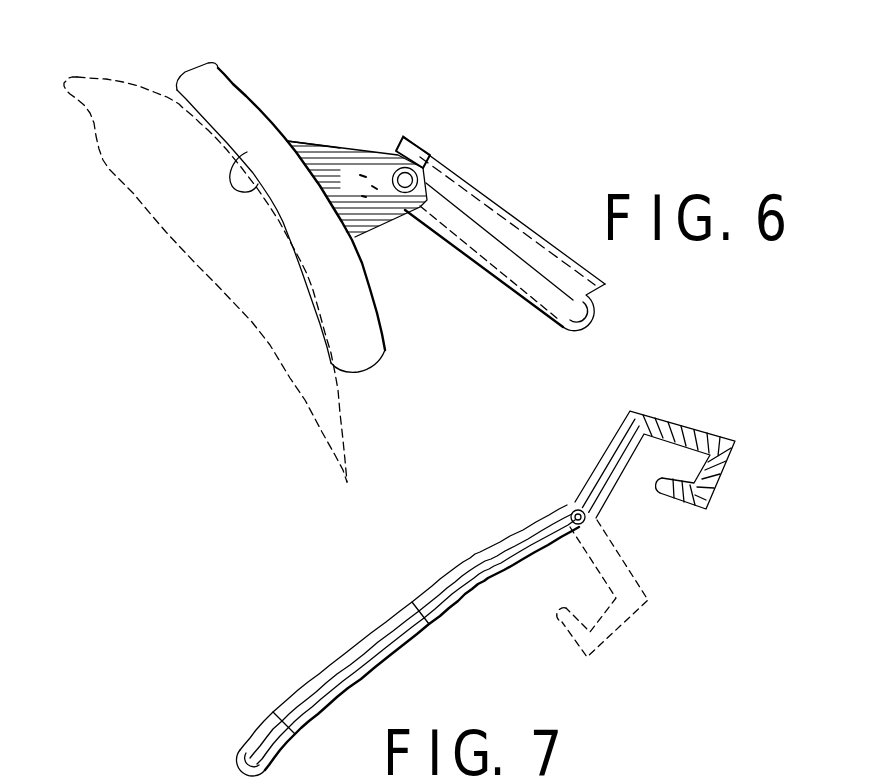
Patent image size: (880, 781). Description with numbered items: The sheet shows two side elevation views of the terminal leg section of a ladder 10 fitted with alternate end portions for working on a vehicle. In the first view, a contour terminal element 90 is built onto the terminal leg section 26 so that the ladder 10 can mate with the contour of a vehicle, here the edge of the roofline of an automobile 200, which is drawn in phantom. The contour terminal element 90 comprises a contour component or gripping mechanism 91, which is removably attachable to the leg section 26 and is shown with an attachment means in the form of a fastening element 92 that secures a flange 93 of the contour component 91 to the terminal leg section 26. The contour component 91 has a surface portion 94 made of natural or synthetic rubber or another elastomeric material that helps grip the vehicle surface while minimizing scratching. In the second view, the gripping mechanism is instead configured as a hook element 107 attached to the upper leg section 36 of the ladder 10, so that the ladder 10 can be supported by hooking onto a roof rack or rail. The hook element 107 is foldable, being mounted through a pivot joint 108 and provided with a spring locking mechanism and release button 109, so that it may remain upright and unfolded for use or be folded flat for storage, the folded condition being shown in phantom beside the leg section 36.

In FIG. 7, the ladder 10 is at (407, 640).
In FIG. 6, the terminal leg section 26 is at (500, 227).
In FIG. 7, the upper leg section 36 is at (520, 547).
In FIG. 6, the contour terminal element 90 is at (222, 64).
In FIG. 6, the contour component 91 is at (241, 92).
In FIG. 6, the fastening element 92 is at (426, 160).
In FIG. 6, the flange 93 is at (347, 156).
In FIG. 6, the surface portion 94 is at (288, 140).
In FIG. 7, the hook element 107 is at (680, 428).
In FIG. 7, the pivot joint 108 is at (576, 511).
In FIG. 7, the spring locking mechanism and release button 109 is at (598, 520).
In FIG. 6, the automobile 200 is at (336, 388).